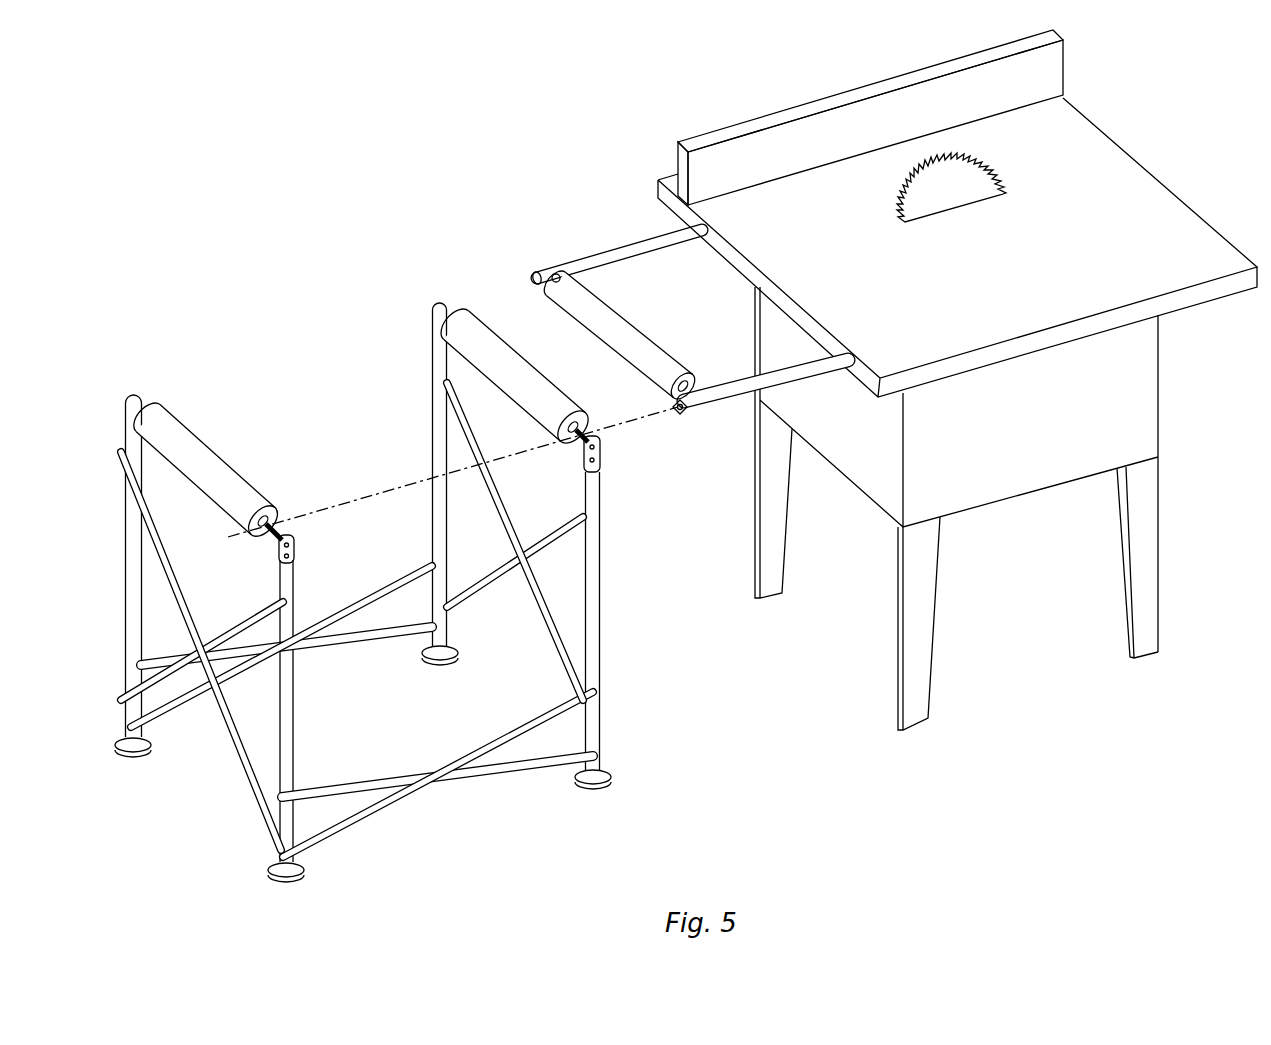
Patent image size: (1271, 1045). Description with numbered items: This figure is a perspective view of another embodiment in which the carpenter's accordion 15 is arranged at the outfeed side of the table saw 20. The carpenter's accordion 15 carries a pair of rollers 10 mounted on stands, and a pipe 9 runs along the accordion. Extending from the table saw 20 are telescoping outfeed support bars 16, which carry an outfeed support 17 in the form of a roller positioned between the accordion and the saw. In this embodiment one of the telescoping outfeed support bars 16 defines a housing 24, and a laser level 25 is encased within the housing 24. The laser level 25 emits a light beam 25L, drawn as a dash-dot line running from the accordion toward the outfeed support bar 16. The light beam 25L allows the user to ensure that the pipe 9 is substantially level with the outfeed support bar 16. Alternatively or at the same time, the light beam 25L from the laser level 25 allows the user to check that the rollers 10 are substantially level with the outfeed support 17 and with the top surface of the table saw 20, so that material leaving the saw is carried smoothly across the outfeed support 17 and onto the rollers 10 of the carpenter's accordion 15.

The carpenter's accordion 15 is at (370, 365).
The rollers 10 is at (520, 355).
The pipe 9 is at (582, 448).
The light beam 25L is at (398, 478).
The telescoping outfeed support bar 16 is at (648, 245).
The outfeed support 17 is at (600, 284).
The housing 24 is at (677, 413).
The laser level 25 is at (687, 410).
The table saw 20 is at (1061, 634).